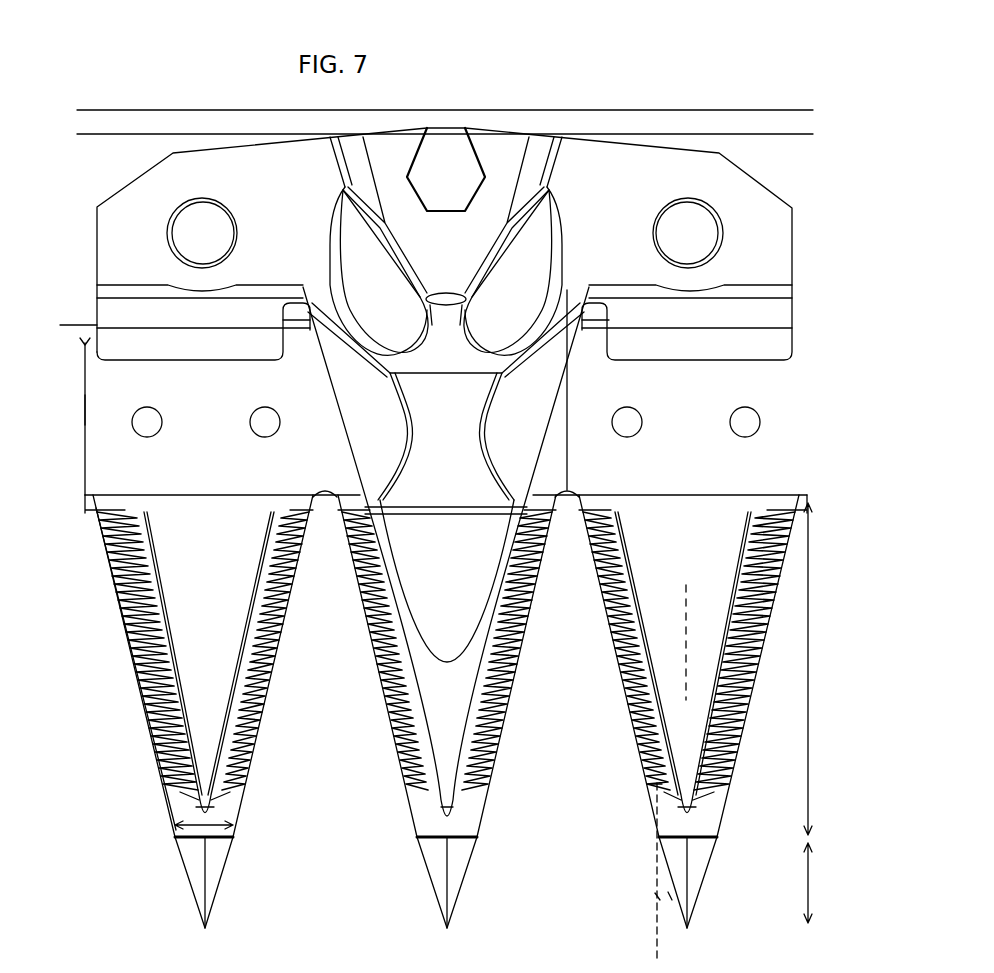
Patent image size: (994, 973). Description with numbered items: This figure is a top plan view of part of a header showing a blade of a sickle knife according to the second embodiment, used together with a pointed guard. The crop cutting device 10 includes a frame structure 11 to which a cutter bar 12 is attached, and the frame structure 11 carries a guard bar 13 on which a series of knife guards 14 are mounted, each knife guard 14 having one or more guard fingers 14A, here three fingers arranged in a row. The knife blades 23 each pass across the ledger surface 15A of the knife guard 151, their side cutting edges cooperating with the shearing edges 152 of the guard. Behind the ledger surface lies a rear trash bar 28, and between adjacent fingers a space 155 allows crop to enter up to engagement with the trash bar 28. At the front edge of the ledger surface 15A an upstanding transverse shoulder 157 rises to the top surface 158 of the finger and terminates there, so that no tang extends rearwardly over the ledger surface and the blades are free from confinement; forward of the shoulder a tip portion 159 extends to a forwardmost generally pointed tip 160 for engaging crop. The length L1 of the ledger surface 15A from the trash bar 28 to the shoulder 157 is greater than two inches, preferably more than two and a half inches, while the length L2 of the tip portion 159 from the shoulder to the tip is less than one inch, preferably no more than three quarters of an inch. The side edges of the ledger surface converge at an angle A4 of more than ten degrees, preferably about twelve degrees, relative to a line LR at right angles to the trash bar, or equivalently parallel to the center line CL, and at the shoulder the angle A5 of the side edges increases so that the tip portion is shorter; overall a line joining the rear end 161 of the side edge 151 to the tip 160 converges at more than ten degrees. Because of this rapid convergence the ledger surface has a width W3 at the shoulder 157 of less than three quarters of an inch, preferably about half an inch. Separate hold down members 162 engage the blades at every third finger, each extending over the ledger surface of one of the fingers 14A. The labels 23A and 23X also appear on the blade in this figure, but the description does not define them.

The crop cutting device 10 is at (445, 84).
The frame structure 11 is at (787, 123).
The cutter bar 12 is at (80, 447).
The guard bar 13 is at (812, 288).
The knife guard 14 is at (446, 711).
The guard finger 14A is at (247, 803).
The ledger surface 15A is at (165, 772).
The knife blade 23 is at (386, 725).
The knife section edge 23A is at (107, 410).
The serration end 23X is at (183, 803).
The rear trash bar 28 is at (325, 505).
The knife guard 151 is at (170, 712).
The shearing edges 152 is at (268, 690).
The space 155 is at (568, 549).
The transverse shoulder 157 is at (458, 830).
The top surface 158 is at (447, 857).
The tip portion 159 is at (245, 879).
The pointed tip 160 is at (208, 932).
The rear end 161 is at (603, 495).
The hold down members 162 is at (345, 445).
The center line CL is at (687, 612).
The angle of convergence of side edges A4 is at (652, 785).
The angle of side edges at shoulder A5 is at (668, 892).
The reference line LR is at (655, 897).
The length of ledger surface L1 is at (795, 690).
The length of tip portion L2 is at (808, 868).
The width of ledger surface at shoulder W3 is at (232, 828).